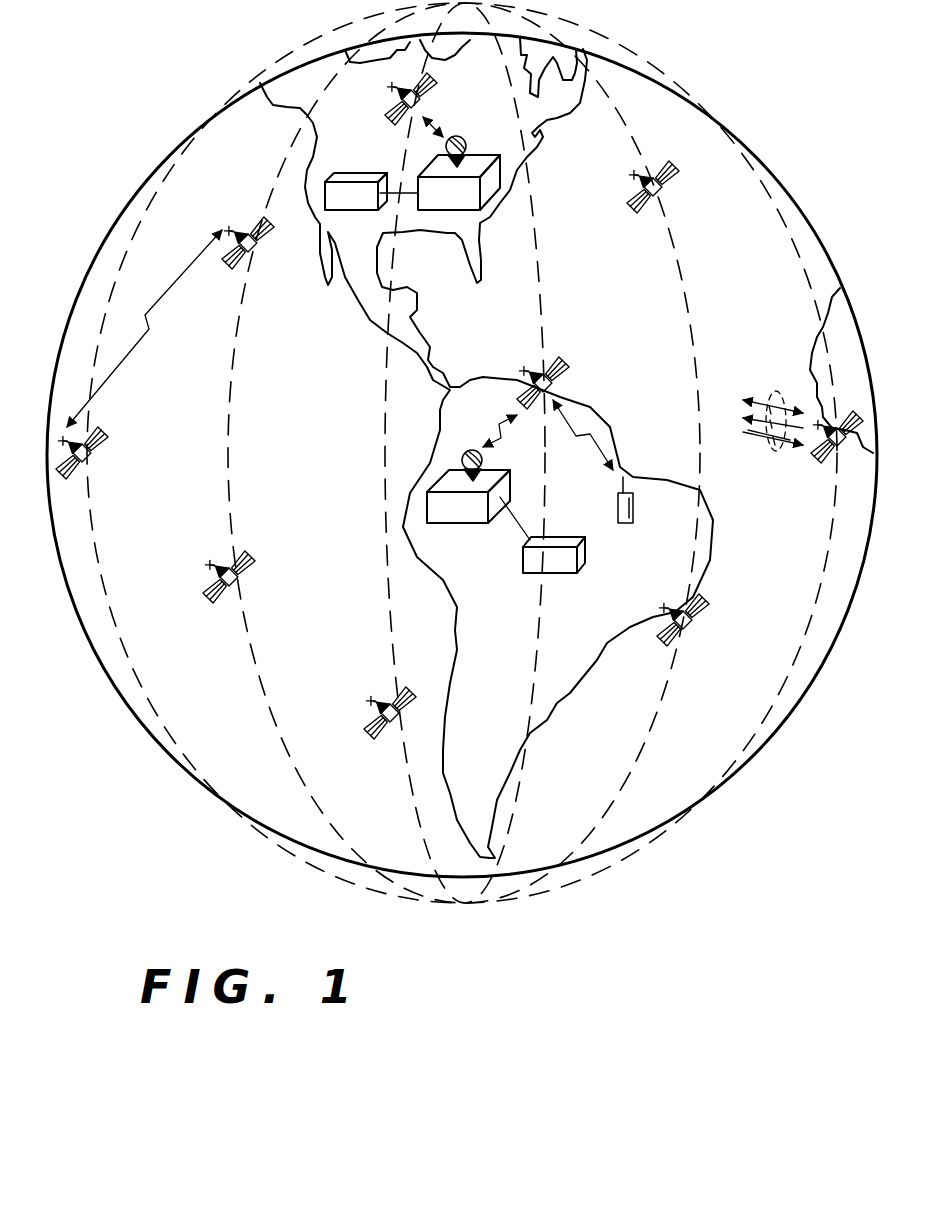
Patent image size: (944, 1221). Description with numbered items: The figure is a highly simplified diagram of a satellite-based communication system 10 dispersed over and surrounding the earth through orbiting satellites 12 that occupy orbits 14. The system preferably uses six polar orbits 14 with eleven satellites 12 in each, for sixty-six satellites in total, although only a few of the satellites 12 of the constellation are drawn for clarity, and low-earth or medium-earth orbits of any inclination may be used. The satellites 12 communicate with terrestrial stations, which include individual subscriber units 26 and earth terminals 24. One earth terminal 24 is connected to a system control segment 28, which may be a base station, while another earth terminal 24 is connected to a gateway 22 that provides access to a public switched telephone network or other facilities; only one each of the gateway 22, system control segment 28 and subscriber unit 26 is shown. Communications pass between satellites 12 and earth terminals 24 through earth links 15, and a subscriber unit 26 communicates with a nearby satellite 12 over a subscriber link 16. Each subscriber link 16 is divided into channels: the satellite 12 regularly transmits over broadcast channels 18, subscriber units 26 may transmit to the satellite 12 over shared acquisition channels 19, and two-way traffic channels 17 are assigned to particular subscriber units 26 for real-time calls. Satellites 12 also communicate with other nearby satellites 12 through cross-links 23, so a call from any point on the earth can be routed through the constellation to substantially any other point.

The satellite-based communication system 10 is at (460, 985).
The satellite 12 is at (391, 130).
The orbit 14 is at (281, 163).
The earth link 15 is at (500, 427).
The subscriber link 16 is at (580, 421).
The traffic channel 17 is at (764, 401).
The broadcast channel 18 is at (750, 418).
The acquisition channel 19 is at (762, 439).
The gateway 22 is at (560, 577).
The cross-link 23 is at (156, 314).
The earth terminal 24 is at (483, 156).
The individual subscriber unit 26 is at (630, 527).
The system control segment 28 is at (338, 212).